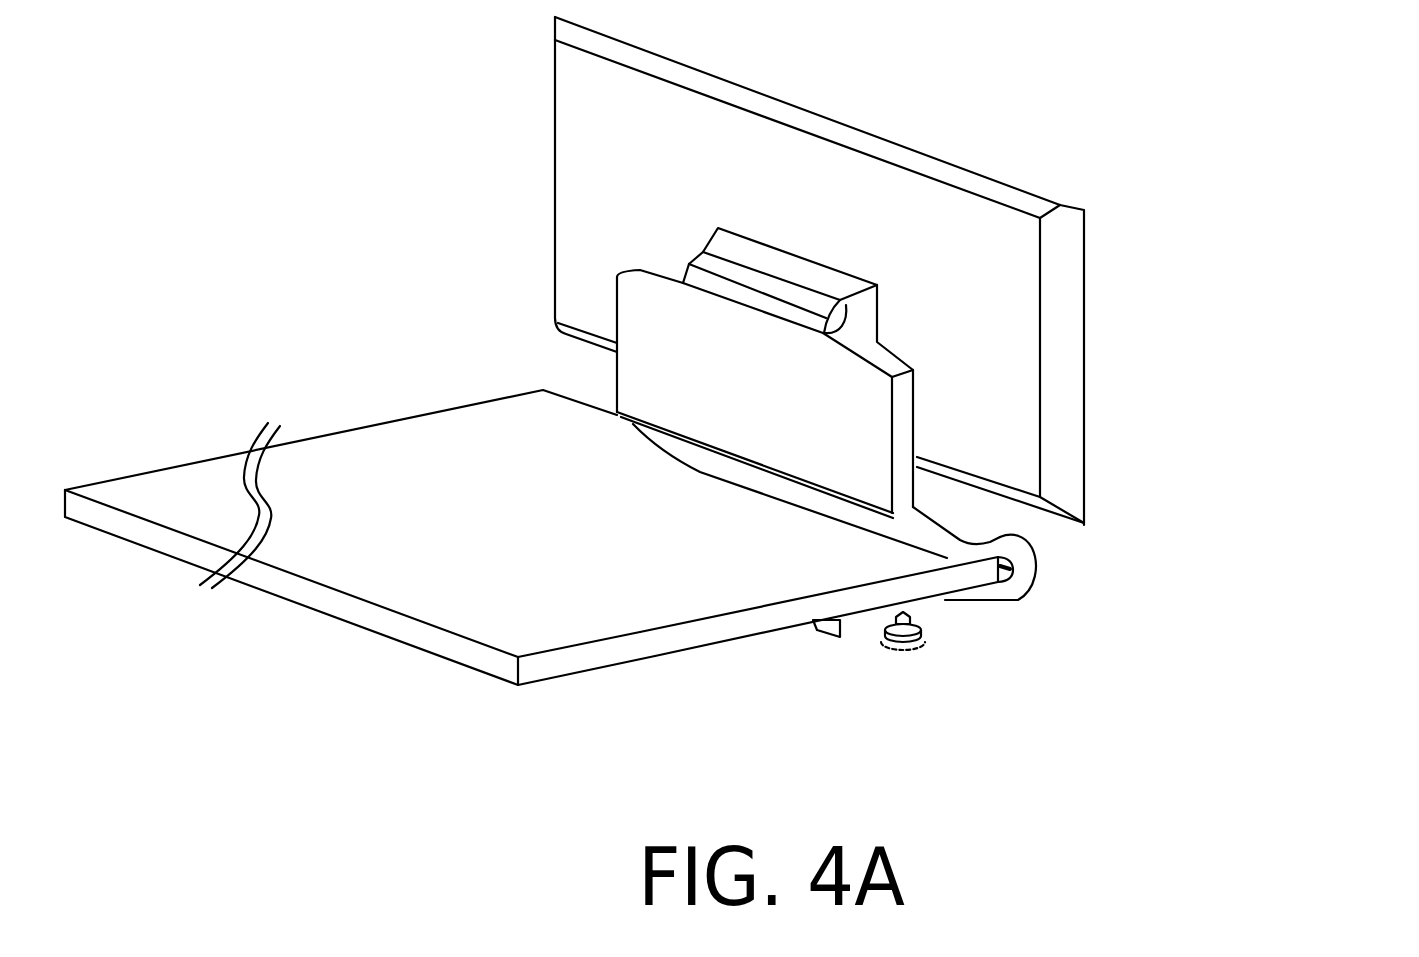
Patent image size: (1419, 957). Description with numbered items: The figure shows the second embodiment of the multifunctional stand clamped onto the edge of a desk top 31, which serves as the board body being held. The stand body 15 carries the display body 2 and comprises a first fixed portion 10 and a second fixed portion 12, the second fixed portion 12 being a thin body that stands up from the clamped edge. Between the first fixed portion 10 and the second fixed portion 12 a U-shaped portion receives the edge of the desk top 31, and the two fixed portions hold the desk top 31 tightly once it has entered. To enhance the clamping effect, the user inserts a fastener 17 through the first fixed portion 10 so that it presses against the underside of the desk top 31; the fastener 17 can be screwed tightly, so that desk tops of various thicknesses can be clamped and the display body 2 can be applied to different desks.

The display body 2 is at (1085, 367).
The first fixed portion 10 is at (977, 605).
The second fixed portion 12 is at (1010, 535).
The stand body 15 is at (1113, 580).
The fastener 17 is at (877, 633).
The desk top 31 is at (383, 607).